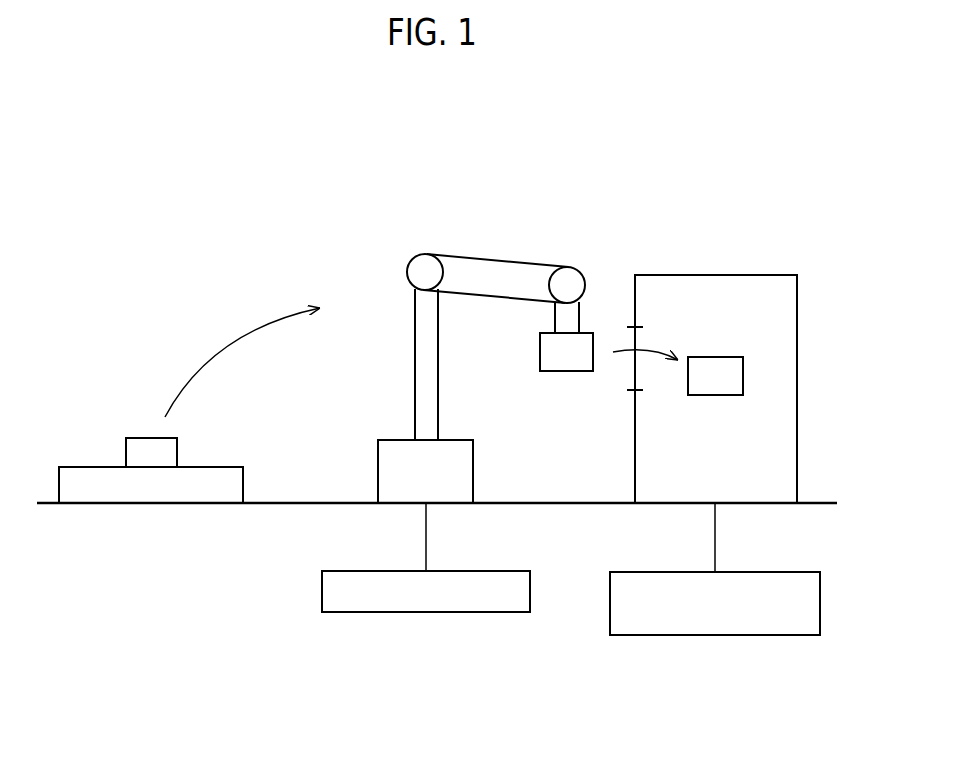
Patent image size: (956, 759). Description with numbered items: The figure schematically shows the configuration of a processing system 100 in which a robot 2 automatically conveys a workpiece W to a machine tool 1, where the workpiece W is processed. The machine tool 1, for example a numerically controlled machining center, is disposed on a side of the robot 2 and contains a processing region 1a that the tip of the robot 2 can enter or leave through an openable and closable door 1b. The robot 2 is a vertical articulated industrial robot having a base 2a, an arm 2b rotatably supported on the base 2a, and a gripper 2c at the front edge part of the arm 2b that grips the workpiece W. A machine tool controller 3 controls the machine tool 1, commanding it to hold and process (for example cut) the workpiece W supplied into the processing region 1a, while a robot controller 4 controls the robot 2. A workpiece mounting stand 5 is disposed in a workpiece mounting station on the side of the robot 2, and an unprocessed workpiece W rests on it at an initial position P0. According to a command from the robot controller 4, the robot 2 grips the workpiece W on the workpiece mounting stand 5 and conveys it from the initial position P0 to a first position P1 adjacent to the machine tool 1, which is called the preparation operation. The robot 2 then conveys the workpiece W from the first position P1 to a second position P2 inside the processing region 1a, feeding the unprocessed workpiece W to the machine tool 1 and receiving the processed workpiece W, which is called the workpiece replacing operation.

The processing system 100 is at (660, 140).
The machine tool 1 is at (757, 273).
The processing region 1a is at (777, 398).
The door 1b is at (633, 377).
The robot 2 is at (517, 238).
The base 2a is at (473, 468).
The arm 2b is at (462, 257).
The gripper 2c is at (555, 320).
The machine tool controller 3 is at (783, 635).
The robot controller 4 is at (478, 612).
The workpiece mounting stand 5 is at (148, 490).
The workpiece W is at (137, 438).
The initial position P0 is at (227, 452).
The first position P1 is at (533, 357).
The second position P2 is at (756, 378).